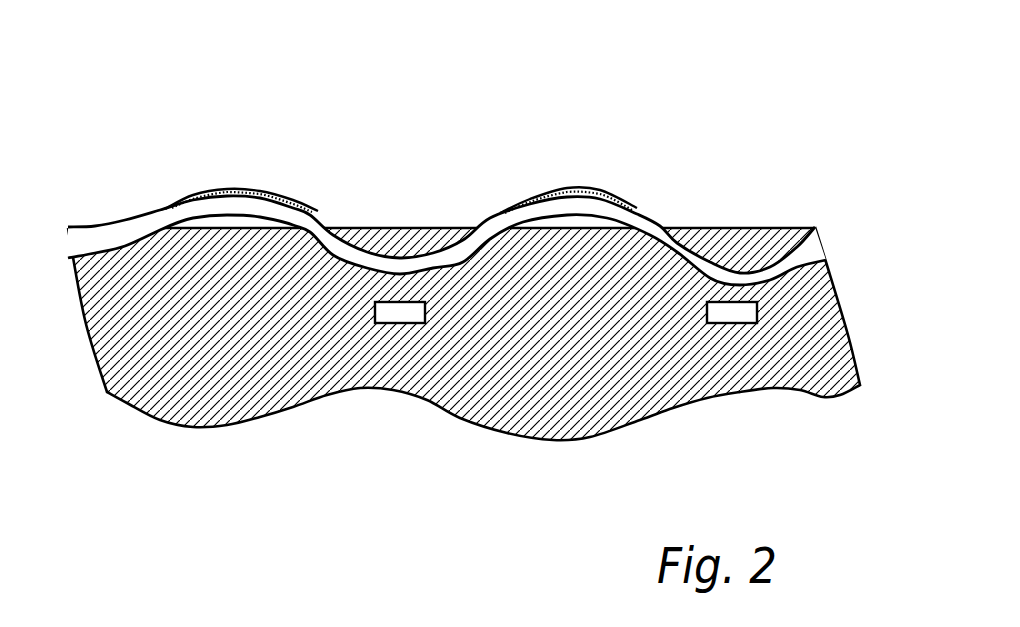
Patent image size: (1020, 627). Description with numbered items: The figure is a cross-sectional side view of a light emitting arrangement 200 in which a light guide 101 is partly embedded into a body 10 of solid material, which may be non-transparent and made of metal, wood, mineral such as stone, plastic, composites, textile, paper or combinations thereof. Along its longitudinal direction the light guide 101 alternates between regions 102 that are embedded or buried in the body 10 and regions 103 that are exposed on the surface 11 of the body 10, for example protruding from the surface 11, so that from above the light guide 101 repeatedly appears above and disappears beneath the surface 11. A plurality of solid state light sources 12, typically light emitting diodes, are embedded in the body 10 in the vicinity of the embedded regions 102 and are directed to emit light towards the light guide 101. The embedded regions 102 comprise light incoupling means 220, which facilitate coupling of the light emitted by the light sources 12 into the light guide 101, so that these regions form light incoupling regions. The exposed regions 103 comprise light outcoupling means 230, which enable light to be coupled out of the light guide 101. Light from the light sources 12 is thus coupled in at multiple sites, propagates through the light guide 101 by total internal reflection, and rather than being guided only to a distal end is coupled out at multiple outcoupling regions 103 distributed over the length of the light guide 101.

The light emitting arrangement 200 is at (145, 98).
The body 10 is at (197, 348).
The surface 11 is at (93, 226).
The solid state light sources 12 is at (385, 324).
The light guide 101 is at (463, 298).
The embedded regions 102 is at (438, 290).
The exposed regions 103 is at (254, 174).
The light incoupling means 220 is at (398, 278).
The light outcoupling means 230 is at (225, 189).